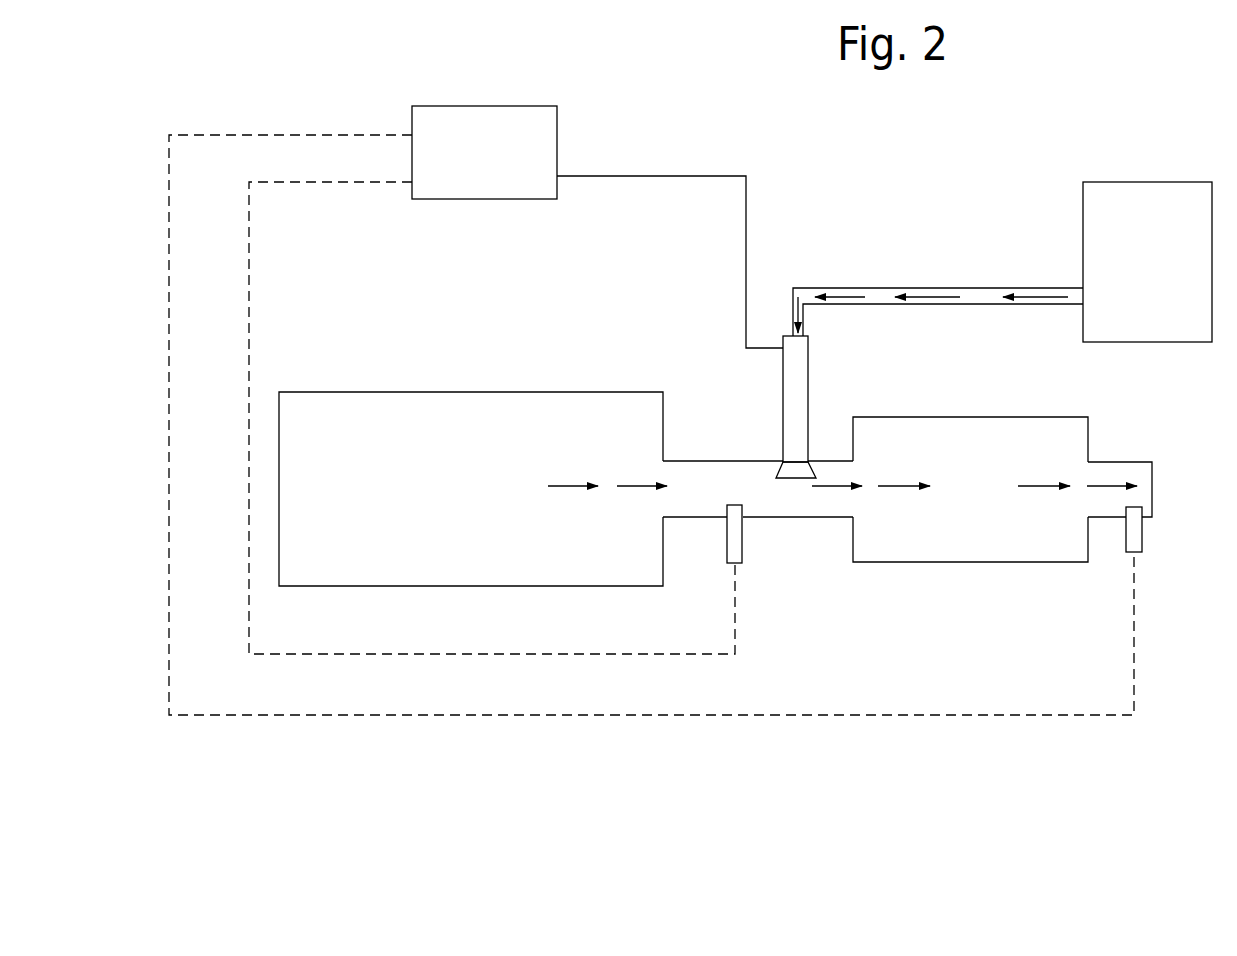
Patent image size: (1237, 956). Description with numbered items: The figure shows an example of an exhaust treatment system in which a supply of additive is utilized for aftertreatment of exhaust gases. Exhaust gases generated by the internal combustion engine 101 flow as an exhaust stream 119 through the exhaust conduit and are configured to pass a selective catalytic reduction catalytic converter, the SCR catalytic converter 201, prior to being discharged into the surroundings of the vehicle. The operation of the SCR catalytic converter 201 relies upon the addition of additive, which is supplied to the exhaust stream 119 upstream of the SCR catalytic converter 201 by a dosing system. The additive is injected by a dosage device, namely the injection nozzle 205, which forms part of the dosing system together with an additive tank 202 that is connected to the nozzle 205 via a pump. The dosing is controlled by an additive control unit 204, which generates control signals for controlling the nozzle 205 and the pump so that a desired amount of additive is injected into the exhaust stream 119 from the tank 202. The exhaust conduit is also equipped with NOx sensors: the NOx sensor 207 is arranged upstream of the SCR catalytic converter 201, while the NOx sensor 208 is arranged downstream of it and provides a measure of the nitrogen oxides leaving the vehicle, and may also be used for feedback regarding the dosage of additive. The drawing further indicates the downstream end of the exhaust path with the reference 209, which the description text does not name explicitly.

The internal combustion engine 101 is at (497, 528).
The exhaust stream 119 is at (577, 483).
The SCR catalytic converter 201 is at (1023, 534).
The additive tank 202 is at (1172, 205).
The additive control unit 204 is at (492, 182).
The dosage device 205 is at (793, 436).
The NOx sensor 207 is at (736, 540).
The NOx sensor 208 is at (1135, 538).
The exhaust gas outlet 209 is at (1150, 490).